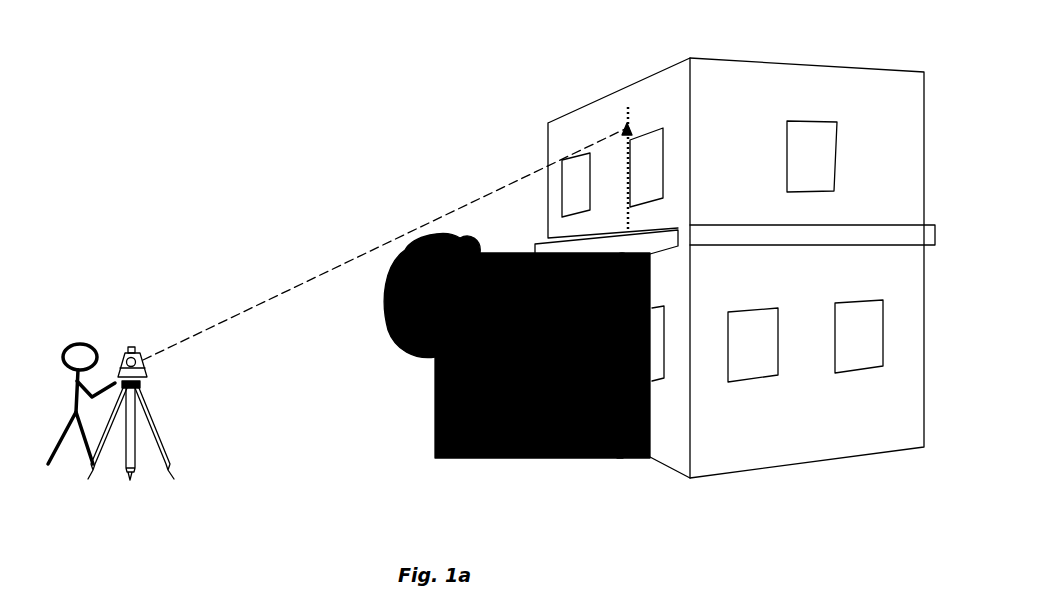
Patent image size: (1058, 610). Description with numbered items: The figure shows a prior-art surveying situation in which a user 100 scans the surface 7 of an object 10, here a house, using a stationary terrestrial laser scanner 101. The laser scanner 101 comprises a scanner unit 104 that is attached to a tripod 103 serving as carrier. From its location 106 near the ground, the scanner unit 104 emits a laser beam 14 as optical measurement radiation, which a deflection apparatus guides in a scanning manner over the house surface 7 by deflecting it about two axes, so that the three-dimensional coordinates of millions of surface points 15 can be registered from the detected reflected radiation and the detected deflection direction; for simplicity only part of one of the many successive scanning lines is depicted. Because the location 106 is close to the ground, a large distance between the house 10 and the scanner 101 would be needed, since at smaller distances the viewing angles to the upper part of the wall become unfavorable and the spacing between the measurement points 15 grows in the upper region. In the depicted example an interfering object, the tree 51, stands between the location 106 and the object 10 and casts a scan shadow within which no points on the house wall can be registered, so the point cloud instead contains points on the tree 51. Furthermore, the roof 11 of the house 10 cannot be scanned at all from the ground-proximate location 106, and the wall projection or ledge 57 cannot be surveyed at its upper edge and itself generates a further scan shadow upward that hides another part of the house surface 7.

The user 100 is at (82, 341).
The terrestrial laser scanner 101 is at (126, 340).
The scanner unit 104 is at (141, 368).
The location 106 is at (151, 389).
The tripod 103 is at (130, 444).
The laser beam 14 is at (393, 240).
The tree 51 is at (390, 326).
The surface 7 is at (653, 90).
The object 10 is at (679, 247).
The roof 11 is at (685, 247).
The ledge 57 is at (660, 242).
The surface points 15 is at (628, 107).